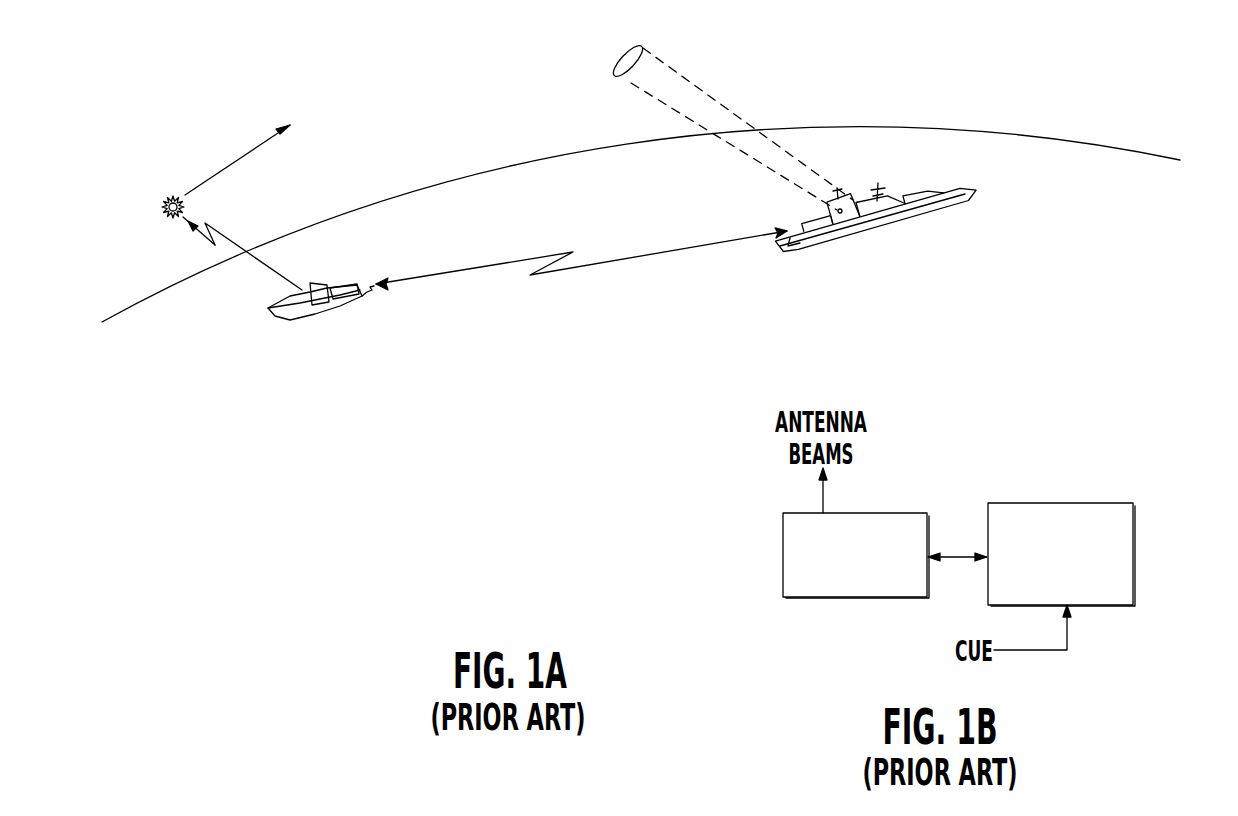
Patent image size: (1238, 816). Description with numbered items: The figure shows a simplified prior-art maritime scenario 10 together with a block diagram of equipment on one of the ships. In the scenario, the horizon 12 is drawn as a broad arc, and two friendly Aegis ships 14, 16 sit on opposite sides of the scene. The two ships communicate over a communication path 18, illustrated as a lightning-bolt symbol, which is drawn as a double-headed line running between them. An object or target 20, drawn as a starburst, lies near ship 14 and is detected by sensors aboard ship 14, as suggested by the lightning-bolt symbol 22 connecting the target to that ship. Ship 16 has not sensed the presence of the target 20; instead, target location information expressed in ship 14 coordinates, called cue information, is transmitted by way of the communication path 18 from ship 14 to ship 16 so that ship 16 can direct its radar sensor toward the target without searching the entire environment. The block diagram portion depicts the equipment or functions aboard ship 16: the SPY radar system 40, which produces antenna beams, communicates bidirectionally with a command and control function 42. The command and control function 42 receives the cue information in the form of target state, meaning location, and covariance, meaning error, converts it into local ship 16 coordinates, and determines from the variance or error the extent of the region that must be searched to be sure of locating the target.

In FIG. 1A, the maritime scenario 10 is at (485, 473).
In FIG. 1A, the horizon 12 is at (345, 217).
In FIG. 1A, the friendly Aegis ship 14 is at (337, 309).
In FIG. 1A, the friendly Aegis ship 16 is at (870, 236).
In FIG. 1A, the communication path 18 is at (608, 263).
In FIG. 1A, the object or target 20 is at (158, 208).
In FIG. 1A, the lightning bolt symbol 22 is at (265, 266).
In FIG. 1B, the SPY radar system 40 is at (783, 547).
In FIG. 1B, the command and control function 42 is at (1135, 543).